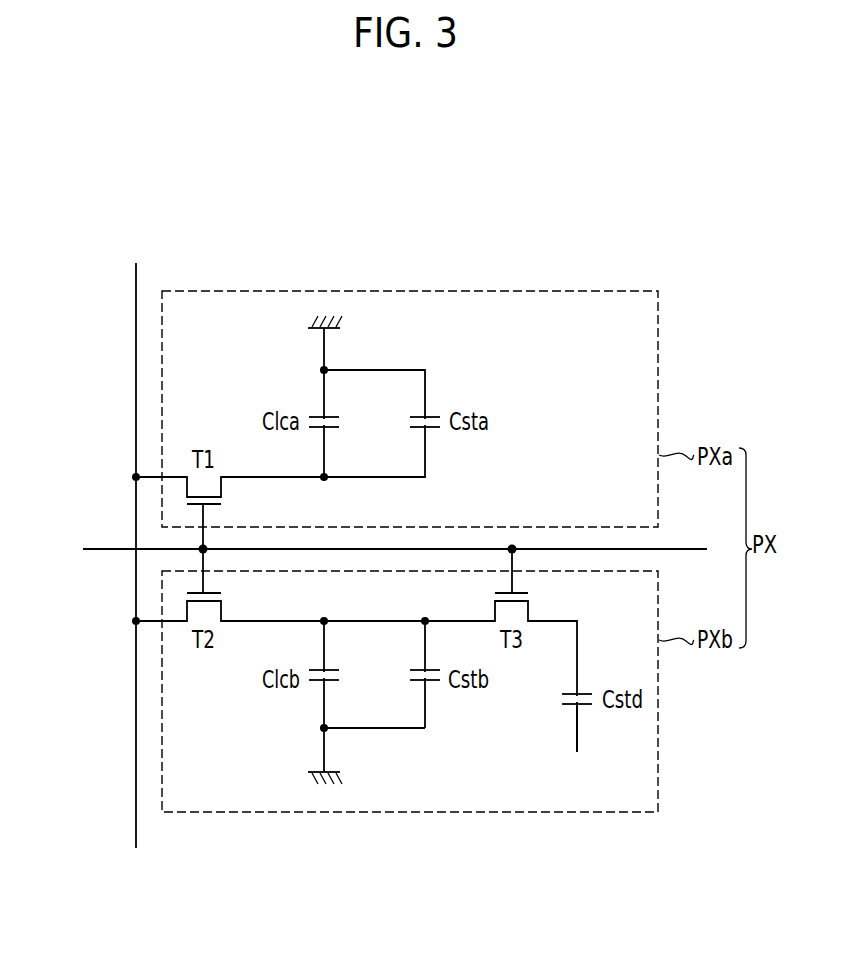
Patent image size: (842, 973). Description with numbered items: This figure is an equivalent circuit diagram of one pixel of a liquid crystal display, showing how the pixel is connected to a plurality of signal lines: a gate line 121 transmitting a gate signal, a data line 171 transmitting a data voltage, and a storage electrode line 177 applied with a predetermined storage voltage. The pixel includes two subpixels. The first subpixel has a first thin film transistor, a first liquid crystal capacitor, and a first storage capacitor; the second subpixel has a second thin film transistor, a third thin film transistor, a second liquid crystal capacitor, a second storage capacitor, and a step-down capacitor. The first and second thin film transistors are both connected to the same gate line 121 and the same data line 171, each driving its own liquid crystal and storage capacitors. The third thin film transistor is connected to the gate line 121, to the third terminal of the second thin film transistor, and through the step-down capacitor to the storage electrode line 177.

The data line 171 is at (135, 345).
The gate line 121 is at (113, 549).
The storage electrode line 177 is at (577, 735).